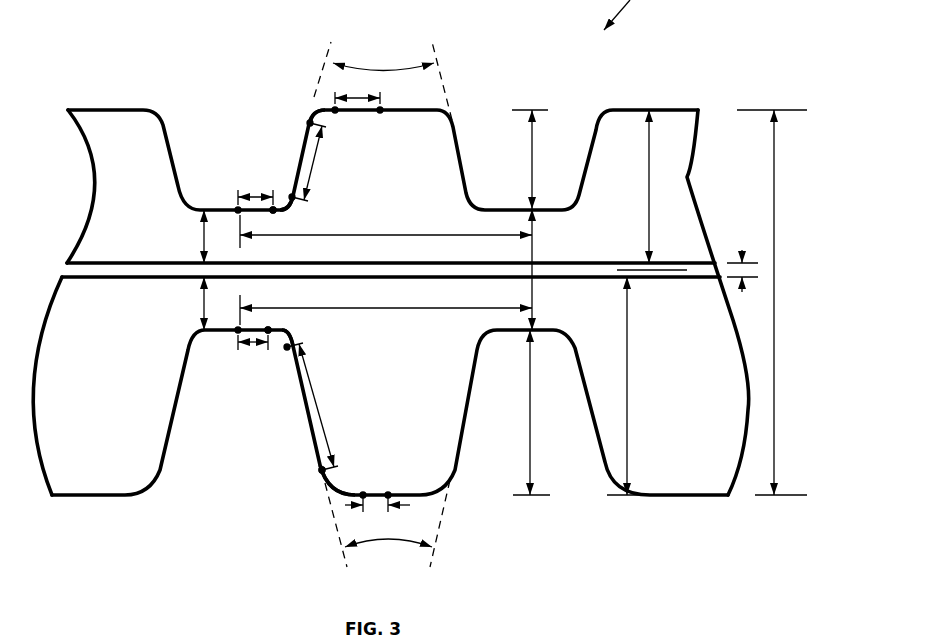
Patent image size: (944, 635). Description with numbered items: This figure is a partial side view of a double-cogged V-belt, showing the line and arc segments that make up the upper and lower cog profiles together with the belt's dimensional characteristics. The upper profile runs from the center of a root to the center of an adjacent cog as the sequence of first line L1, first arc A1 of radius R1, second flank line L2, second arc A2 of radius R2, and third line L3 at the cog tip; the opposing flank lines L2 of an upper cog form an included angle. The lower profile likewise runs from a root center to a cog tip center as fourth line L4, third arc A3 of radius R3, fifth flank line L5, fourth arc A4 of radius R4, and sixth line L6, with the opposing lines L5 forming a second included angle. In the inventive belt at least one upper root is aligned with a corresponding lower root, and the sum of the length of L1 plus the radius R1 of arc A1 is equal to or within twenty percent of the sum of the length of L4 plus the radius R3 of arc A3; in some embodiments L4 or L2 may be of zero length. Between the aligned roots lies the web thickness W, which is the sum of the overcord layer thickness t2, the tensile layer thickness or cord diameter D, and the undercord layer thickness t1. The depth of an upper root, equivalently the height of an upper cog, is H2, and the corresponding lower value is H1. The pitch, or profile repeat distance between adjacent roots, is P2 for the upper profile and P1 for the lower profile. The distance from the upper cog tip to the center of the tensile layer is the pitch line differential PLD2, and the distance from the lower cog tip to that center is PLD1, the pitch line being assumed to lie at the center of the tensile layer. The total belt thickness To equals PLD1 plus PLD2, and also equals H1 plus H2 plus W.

The third line segment L3 is at (357, 93).
The second arc A2 is at (319, 108).
The radius of second arc R2 is at (322, 114).
The second line segment L2 is at (318, 162).
The first line segment L1 is at (249, 192).
The radius of first arc R1 is at (287, 200).
The first arc A1 is at (283, 208).
The overcord layer thickness t2 is at (189, 236).
The upper profile pitch P2 is at (386, 231).
The upper cog height H2 is at (538, 159).
The web thickness W is at (544, 269).
The upper pitch line differential PLD2 is at (619, 186).
The tensile layer thickness D is at (743, 261).
The total belt thickness To is at (772, 302).
The undercord layer thickness t1 is at (189, 303).
The lower profile pitch P1 is at (386, 314).
The fourth line segment L4 is at (240, 342).
The radius of third arc R3 is at (280, 342).
The third arc A3 is at (287, 333).
The fifth line segment L5 is at (317, 408).
The radius of fourth arc R4 is at (344, 486).
The fourth arc A4 is at (326, 482).
The sixth line segment L6 is at (377, 514).
The lower cog height H1 is at (544, 412).
The lower pitch line differential PLD1 is at (642, 386).